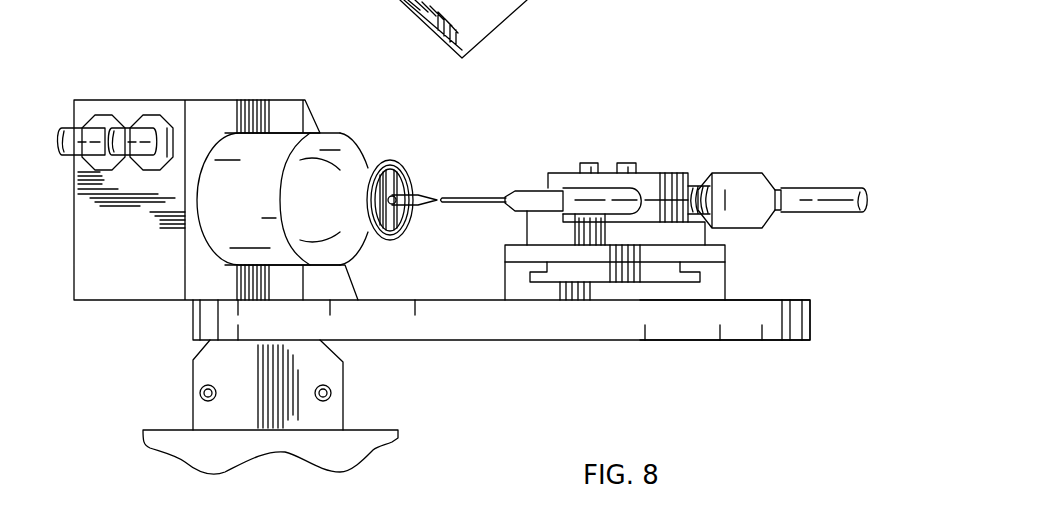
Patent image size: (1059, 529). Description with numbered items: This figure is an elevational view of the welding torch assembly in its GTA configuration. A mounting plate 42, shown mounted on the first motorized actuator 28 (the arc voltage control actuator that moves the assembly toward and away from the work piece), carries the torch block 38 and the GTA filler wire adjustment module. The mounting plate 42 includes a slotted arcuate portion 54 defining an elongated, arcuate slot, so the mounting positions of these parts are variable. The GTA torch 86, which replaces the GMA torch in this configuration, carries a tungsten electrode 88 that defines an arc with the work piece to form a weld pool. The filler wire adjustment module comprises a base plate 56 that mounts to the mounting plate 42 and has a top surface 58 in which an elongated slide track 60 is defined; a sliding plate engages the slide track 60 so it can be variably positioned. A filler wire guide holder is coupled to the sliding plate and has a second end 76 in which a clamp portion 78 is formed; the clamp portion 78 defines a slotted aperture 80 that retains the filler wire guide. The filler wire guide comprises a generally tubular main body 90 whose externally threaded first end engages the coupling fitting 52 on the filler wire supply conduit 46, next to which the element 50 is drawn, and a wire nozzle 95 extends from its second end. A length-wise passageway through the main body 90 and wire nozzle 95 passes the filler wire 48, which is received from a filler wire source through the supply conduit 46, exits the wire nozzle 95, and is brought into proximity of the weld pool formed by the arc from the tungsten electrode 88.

The first motorized actuator 28 is at (540, 0).
The torch block 38 is at (113, 100).
The mounting plate 42 is at (192, 320).
The filler wire supply conduit 46 is at (856, 187).
The filler wire 48 is at (478, 203).
The ferrule 50 is at (778, 187).
The coupling fitting 52 is at (742, 175).
The slotted arcuate portion 54 is at (738, 340).
The base plate 56 is at (505, 275).
The top surface 58 is at (522, 265).
The slide track 60 is at (548, 266).
The second end 76 is at (668, 175).
The clamp portion 78 is at (700, 248).
The slotted aperture 80 is at (655, 206).
The GTA torch 86 is at (347, 134).
The tungsten electrode 88 is at (428, 193).
The main body 90 is at (583, 200).
The wire nozzle 95 is at (516, 190).